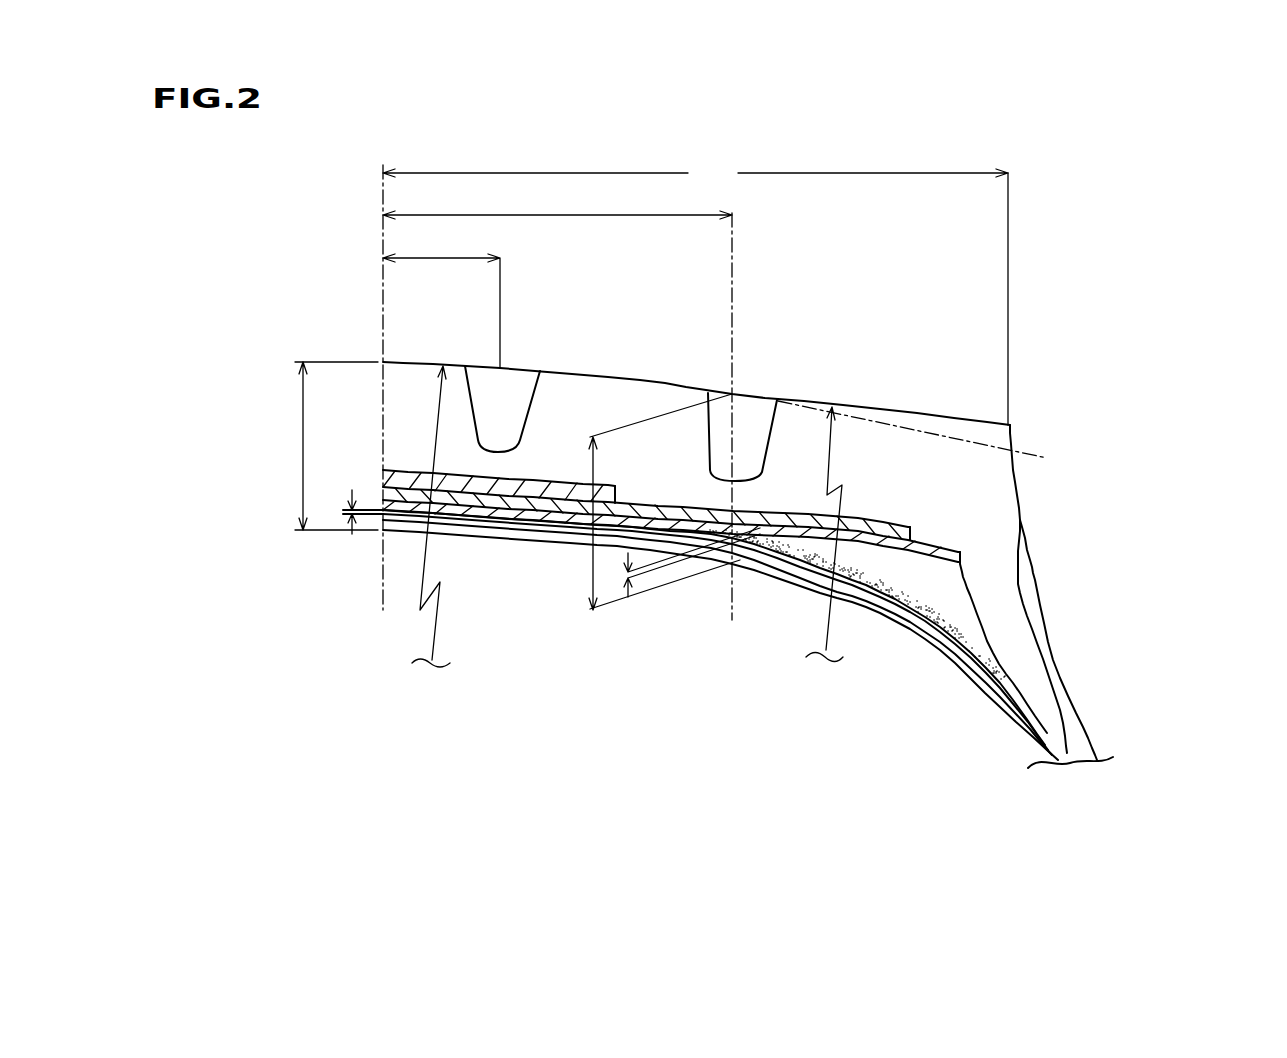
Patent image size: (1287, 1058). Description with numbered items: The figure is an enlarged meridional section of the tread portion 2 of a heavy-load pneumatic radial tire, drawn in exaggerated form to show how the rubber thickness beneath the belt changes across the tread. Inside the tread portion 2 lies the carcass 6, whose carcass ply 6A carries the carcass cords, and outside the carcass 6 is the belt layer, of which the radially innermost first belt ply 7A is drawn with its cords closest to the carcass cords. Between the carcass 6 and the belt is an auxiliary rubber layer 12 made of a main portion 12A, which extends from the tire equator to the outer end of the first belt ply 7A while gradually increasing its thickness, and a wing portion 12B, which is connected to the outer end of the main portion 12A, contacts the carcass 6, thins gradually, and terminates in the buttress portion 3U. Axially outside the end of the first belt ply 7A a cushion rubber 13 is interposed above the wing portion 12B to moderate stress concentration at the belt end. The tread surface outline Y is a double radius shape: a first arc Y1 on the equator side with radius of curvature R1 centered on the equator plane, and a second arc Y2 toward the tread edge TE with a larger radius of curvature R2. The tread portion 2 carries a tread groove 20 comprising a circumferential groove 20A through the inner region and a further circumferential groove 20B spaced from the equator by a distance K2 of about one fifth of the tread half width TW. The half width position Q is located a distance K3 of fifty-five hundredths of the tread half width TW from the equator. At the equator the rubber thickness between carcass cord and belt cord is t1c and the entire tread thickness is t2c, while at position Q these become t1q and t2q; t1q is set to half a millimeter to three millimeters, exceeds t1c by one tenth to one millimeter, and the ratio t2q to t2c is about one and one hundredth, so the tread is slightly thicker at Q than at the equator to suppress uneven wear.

The tread portion 2 is at (1040, 338).
The buttress portion 3U is at (1113, 653).
The carcass 6 is at (720, 710).
The carcass ply 6A is at (1030, 715).
The first belt ply 7A is at (903, 547).
The auxiliary rubber layer 12 is at (858, 757).
The main portion 12A is at (864, 584).
The wing portion 12B is at (960, 628).
The cushion rubber 13 is at (970, 610).
The tread groove 20 is at (662, 368).
The circumferential groove 20A is at (759, 379).
The circumferential groove 20B is at (506, 384).
The tread edge TE is at (1010, 425).
The tread half width TW is at (695, 175).
The half width position Q is at (733, 233).
The distance K2 is at (442, 258).
The distance K3 is at (558, 214).
The outline of the tread portion Y is at (837, 359).
The first arc Y1 is at (642, 380).
The second arc Y2 is at (906, 408).
The rubber thickness on the tire equator t1c is at (351, 508).
The entire thickness of the tread portion at the tire equator t2c is at (302, 440).
The rubber thickness in the half width position t1q is at (630, 577).
The entire thickness of the tread portion in the half width position t2q is at (590, 558).
The radius of curvature R1 is at (433, 637).
The radius of curvature R2 is at (823, 628).